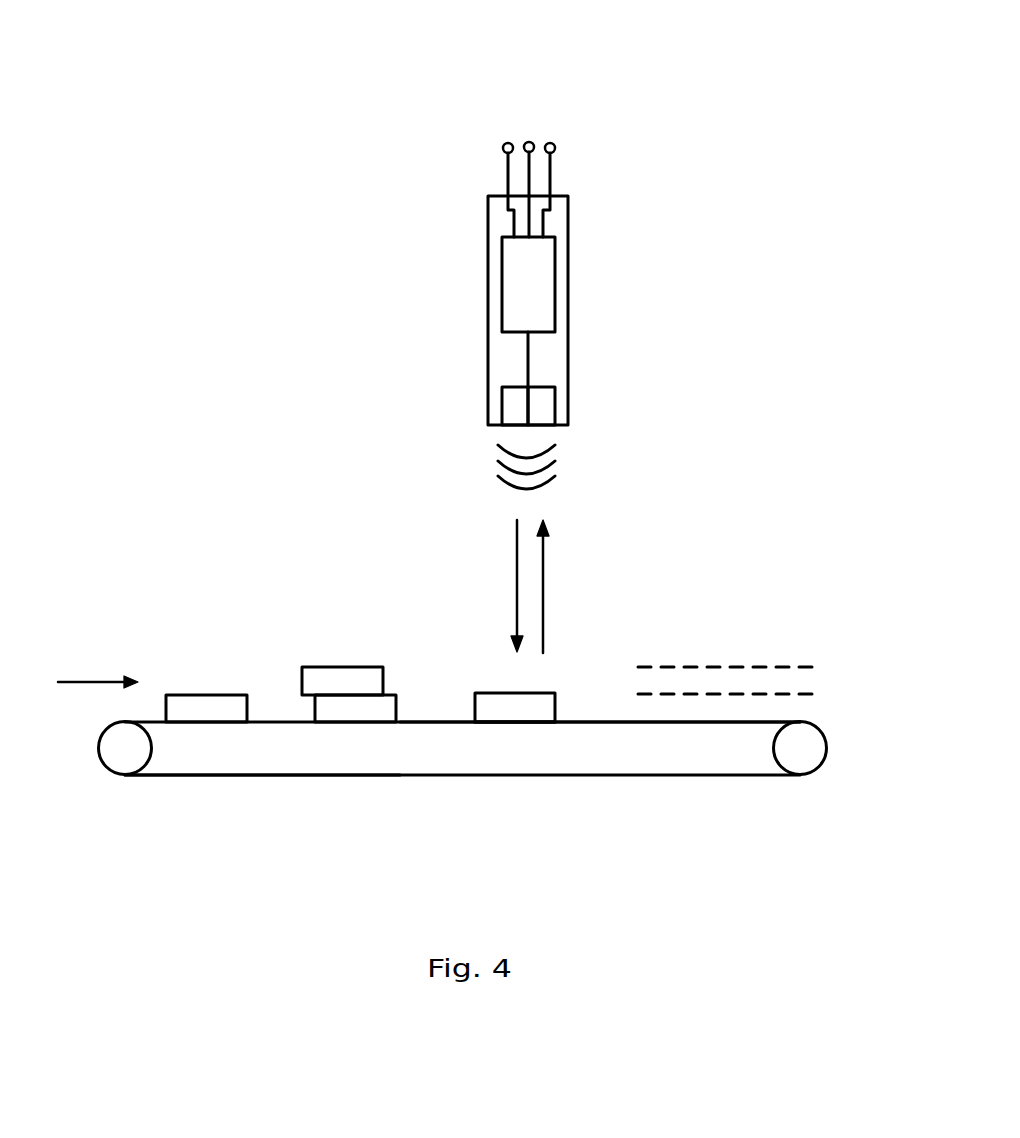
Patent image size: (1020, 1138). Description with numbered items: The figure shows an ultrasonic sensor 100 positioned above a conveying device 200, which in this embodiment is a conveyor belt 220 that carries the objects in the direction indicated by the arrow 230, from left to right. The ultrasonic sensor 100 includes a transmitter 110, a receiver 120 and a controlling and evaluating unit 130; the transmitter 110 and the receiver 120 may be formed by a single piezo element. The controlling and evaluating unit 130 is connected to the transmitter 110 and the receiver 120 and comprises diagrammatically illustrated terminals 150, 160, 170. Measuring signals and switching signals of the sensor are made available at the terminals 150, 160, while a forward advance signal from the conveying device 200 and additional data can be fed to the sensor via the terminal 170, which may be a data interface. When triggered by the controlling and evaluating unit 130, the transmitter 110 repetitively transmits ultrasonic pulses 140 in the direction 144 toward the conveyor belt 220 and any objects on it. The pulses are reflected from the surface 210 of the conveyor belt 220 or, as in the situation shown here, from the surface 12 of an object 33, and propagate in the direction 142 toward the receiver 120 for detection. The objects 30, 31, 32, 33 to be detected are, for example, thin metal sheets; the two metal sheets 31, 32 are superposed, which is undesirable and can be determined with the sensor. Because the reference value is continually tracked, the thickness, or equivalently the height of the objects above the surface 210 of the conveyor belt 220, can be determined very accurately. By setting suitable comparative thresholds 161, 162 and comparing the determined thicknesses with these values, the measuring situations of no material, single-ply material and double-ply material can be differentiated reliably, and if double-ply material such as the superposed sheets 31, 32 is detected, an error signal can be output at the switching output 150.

The ultrasonic sensor 100 is at (560, 217).
The transmitter 110 is at (507, 398).
The receiver 120 is at (548, 402).
The controlling and evaluating unit 130 is at (547, 308).
The ultrasonic pulses 140 is at (550, 447).
The direction of reflected pulses 142 is at (543, 550).
The direction of transmitted pulses 144 is at (513, 570).
The terminal (switching output) 150 is at (508, 142).
The terminal 160 is at (529, 141).
The terminal (data interface) 170 is at (555, 143).
The comparative threshold 161 is at (808, 693).
The comparative threshold 162 is at (762, 667).
The surface of object 12 is at (495, 693).
The object (thin metal sheet) 30 is at (213, 707).
The object (metal sheet) 31 is at (357, 680).
The object (metal sheet) 32 is at (368, 710).
The object (thin metal sheet) 33 is at (522, 712).
The conveying device 200 is at (657, 760).
The surface of conveyor belt 210 is at (593, 720).
The conveyor belt 220 is at (238, 748).
The arrow (conveying direction) 230 is at (72, 680).